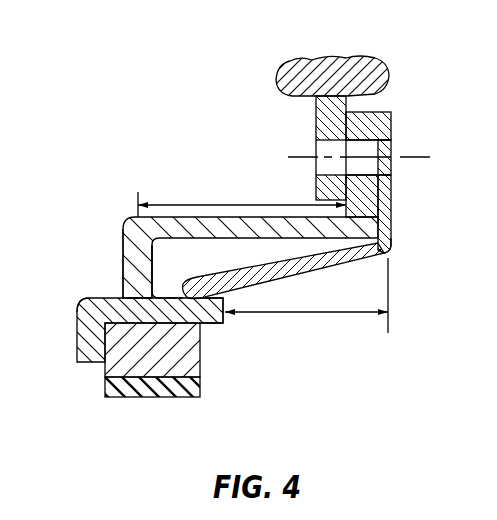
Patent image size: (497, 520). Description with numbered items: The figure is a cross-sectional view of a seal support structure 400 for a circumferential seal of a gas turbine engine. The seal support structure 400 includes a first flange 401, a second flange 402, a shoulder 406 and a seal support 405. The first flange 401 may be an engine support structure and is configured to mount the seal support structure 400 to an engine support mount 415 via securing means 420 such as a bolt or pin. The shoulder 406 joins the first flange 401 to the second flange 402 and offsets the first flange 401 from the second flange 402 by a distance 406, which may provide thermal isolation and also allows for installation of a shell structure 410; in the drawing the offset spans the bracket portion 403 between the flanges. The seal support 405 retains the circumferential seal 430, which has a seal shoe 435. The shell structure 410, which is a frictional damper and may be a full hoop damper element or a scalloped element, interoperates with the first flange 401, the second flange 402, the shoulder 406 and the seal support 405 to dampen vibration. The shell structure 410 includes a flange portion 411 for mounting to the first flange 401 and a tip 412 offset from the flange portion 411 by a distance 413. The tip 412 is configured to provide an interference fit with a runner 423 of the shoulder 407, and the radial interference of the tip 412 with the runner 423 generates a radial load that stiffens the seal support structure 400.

The seal support structure 400 is at (95, 118).
The engine support mount 415 is at (277, 61).
The securing means 420 is at (316, 150).
The first flange 401 is at (393, 118).
The flange portion 411 is at (393, 195).
The shell structure 410 is at (333, 272).
The seal support 405 is at (400, 244).
The bracket 403 is at (204, 216).
The second flange 402 is at (122, 235).
The shoulder 406 is at (258, 204).
The tip 412 is at (176, 271).
The shoulder 407 is at (93, 297).
The runner 423 is at (224, 318).
The circumferential seal 430 is at (105, 338).
The seal shoe 435 is at (105, 384).
The distance 413 is at (316, 313).